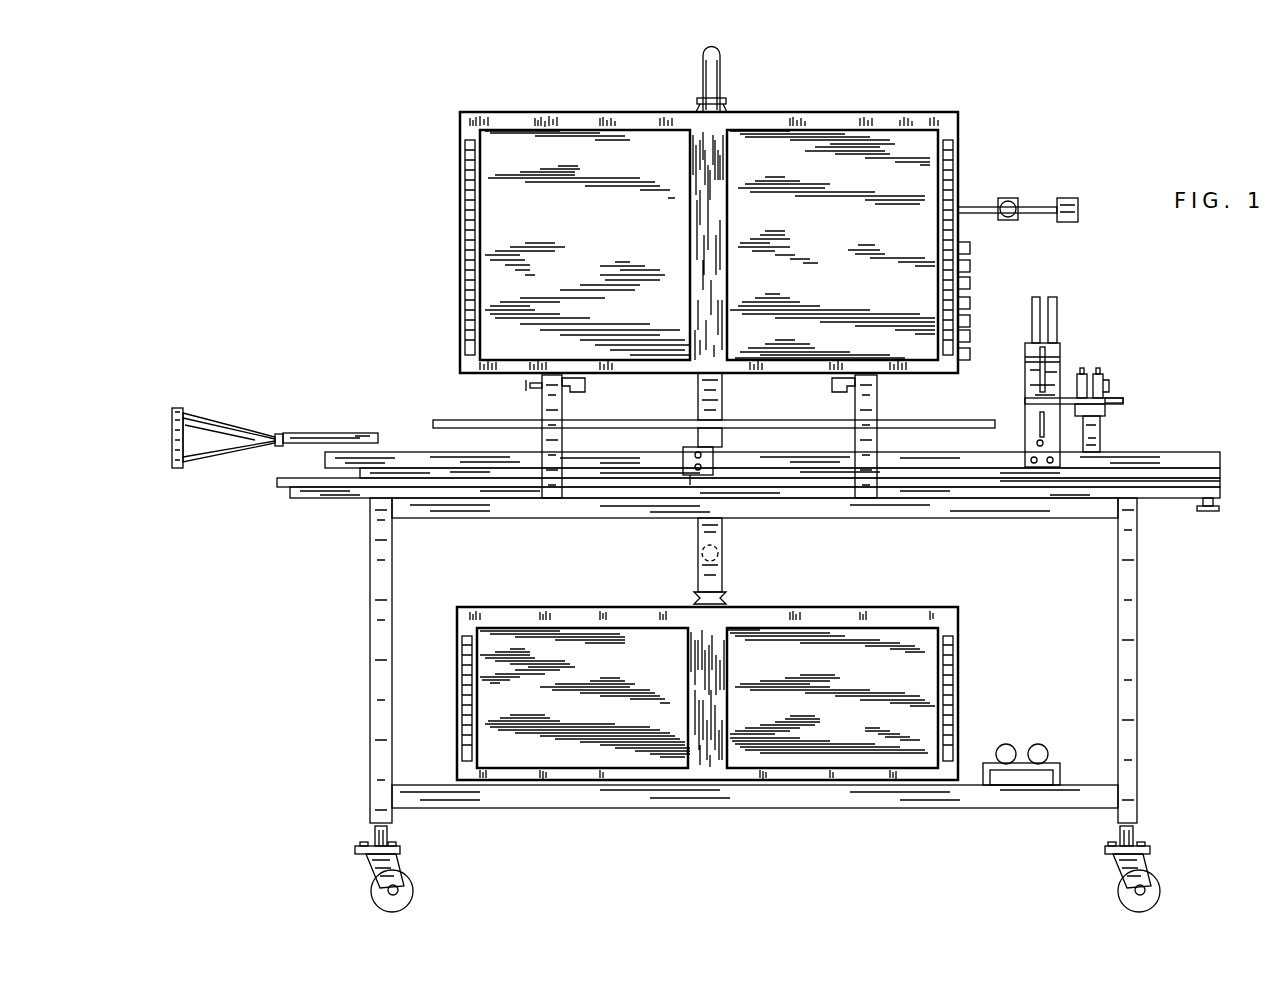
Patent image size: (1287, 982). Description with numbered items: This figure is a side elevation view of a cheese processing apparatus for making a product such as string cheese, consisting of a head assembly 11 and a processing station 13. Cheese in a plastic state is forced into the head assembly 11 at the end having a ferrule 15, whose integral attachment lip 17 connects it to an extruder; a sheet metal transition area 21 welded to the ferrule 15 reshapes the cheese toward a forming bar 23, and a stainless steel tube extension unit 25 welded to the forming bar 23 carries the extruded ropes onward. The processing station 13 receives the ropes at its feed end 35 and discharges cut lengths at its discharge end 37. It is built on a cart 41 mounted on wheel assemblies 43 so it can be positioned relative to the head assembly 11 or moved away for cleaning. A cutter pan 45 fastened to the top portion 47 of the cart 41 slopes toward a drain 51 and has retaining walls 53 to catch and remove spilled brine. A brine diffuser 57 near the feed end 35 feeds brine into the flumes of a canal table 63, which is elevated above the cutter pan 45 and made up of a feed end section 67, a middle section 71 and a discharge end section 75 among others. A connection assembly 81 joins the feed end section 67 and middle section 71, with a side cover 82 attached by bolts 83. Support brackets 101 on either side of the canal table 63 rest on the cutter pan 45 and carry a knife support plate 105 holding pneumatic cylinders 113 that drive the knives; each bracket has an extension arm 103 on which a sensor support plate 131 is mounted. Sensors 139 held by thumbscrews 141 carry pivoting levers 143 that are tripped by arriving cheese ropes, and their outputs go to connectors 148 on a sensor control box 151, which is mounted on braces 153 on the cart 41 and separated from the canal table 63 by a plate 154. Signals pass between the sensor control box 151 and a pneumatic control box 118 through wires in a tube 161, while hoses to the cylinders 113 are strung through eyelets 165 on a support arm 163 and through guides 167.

The head assembly 11 is at (265, 388).
The processing station 13 is at (405, 303).
The ferrule 15 is at (185, 468).
The attachment lip 17 is at (174, 470).
The transition area 21 is at (235, 458).
The forming bar 23 is at (280, 433).
The tube extension unit 25 is at (320, 433).
The feed end 35 is at (306, 618).
The discharge end 37 is at (1195, 565).
The cart 41 is at (370, 716).
The wheel assembly 43 is at (402, 850).
The cutter pan 45 is at (300, 488).
The top portion 47 is at (1000, 510).
The drain 51 is at (1222, 508).
The retaining wall 53 is at (1222, 480).
The brine diffuser 57 is at (350, 490).
The canal table 63 is at (405, 452).
The feed end section 67 is at (523, 490).
The middle section 71 is at (840, 490).
The discharge end section 75 is at (1213, 452).
The connection assembly 81 is at (690, 478).
The side cover 82 is at (683, 447).
The bolts 83 is at (702, 467).
The support bracket 101 is at (1083, 374).
The extension arm 103 is at (1105, 410).
The knife support plate 105 is at (1058, 356).
The pneumatic cylinder 113 is at (1036, 300).
The pneumatic control box 118 is at (640, 678).
The sensor support plate 131 is at (1103, 378).
The sensor 139 is at (1108, 378).
The thumbscrew 141 is at (1123, 400).
The lever 143 is at (1100, 435).
The connector 148 is at (972, 247).
The sensor control box 151 is at (848, 232).
The brace 153 is at (565, 410).
The plate 154 is at (447, 420).
The tube 161 is at (722, 82).
The support arm 163 is at (985, 207).
The eyelet 165 is at (1066, 198).
The guide 167 is at (1040, 748).